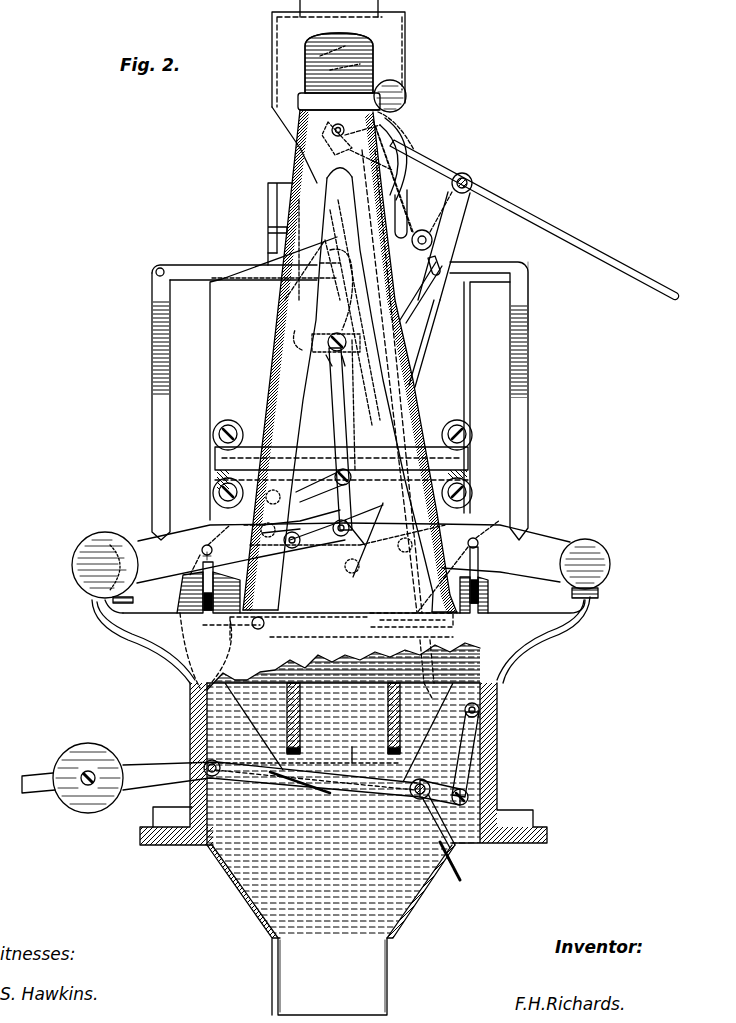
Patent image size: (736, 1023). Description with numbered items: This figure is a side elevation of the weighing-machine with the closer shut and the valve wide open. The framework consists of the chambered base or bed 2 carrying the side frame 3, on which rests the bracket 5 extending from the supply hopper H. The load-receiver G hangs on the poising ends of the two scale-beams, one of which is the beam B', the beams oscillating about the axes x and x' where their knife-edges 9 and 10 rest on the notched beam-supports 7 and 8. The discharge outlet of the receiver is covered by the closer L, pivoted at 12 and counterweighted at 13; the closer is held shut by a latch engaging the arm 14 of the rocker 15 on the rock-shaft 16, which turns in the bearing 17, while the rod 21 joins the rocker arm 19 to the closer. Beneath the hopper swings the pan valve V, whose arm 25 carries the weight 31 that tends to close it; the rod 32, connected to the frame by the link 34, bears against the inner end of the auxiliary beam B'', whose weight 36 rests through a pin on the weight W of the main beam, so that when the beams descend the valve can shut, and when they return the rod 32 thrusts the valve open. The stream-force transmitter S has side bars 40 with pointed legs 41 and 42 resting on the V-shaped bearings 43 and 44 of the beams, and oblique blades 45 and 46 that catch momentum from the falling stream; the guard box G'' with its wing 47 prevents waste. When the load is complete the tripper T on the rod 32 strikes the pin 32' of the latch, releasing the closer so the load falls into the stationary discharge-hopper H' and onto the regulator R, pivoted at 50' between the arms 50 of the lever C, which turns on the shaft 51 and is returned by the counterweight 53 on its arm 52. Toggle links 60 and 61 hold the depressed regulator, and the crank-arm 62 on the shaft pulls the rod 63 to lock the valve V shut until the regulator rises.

The hopper H is at (320, 91).
The bracket 5 is at (368, 46).
The weight 31 is at (397, 95).
The arm 25 is at (331, 129).
The swinging valve V is at (405, 133).
The arm of the rocker 19 is at (424, 230).
The rocker 15 is at (457, 238).
The rock-shaft 16 is at (421, 230).
The bearing 17 is at (442, 262).
The arm of the rocker 14 is at (405, 322).
The rod 21 is at (420, 354).
The side frame 3 is at (420, 422).
The lateral flange or wing 47 is at (288, 184).
The frame panel G'' is at (262, 216).
The side bar 40 is at (212, 268).
The leg 41 is at (152, 420).
The load-receiver G is at (346, 399).
The leg 42 is at (520, 415).
The stream-force transmitter S is at (537, 296).
The oblique blade 45 is at (310, 268).
The oblique blade 46 is at (350, 260).
The tripper T is at (365, 335).
The closer L is at (311, 361).
The rod 32 is at (328, 442).
The pin 32' is at (335, 405).
The link 34 is at (316, 484).
The auxiliary beam B'' is at (231, 548).
The beam B' is at (457, 548).
The weight 36 is at (78, 548).
The weight W is at (124, 585).
The knife-edge 9 is at (212, 545).
The axis of oscillation x is at (192, 550).
The beam-support 7 is at (203, 577).
The knife-edge 10 is at (476, 537).
The axis of oscillation x' is at (496, 547).
The beam-support 8 is at (481, 575).
The counterweight 13 is at (180, 612).
The chambered base or bed 2 is at (492, 712).
The stationary discharge-hopper H' is at (342, 789).
The crank-arm 62 is at (377, 740).
The rod 63 is at (428, 648).
The pivot 12 is at (265, 620).
The link 61 is at (480, 733).
The link 60 is at (440, 790).
The pivot 50' is at (450, 837).
The arm 50 is at (271, 789).
The regulator R is at (300, 786).
The pivot or shaft 51 is at (205, 763).
The carrier or lever C is at (262, 767).
The counterweight 53 is at (95, 810).
The arm 52 is at (42, 788).
The V-shaped bearing 43 is at (165, 530).
The V-shaped bearing 44 is at (522, 530).